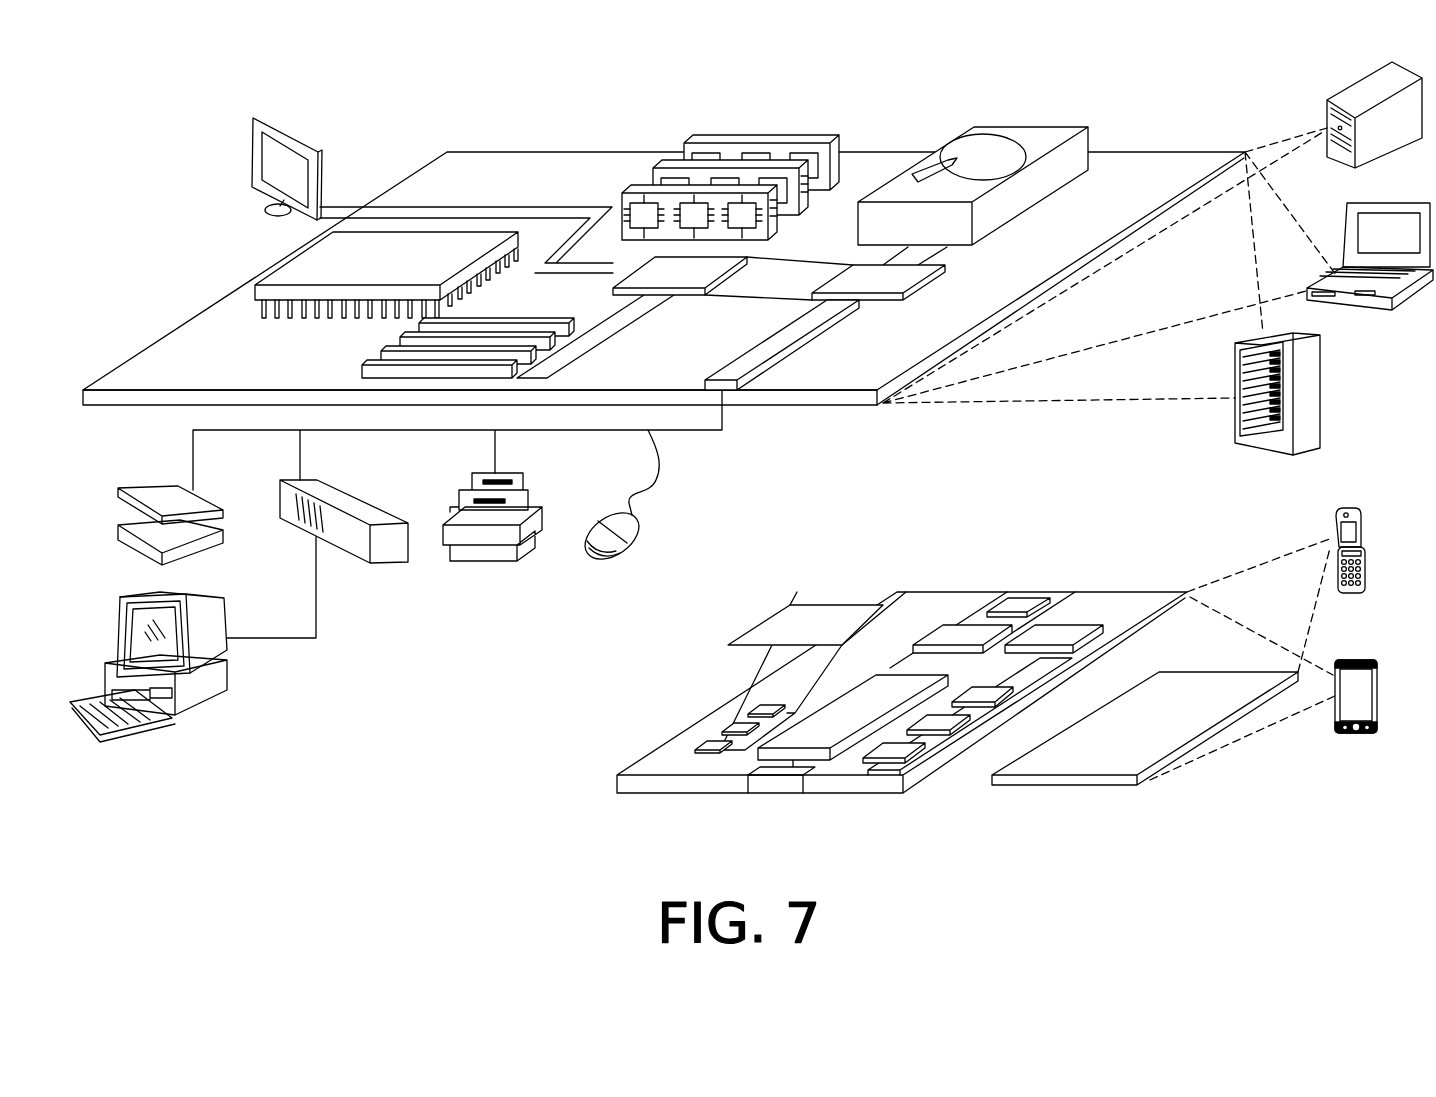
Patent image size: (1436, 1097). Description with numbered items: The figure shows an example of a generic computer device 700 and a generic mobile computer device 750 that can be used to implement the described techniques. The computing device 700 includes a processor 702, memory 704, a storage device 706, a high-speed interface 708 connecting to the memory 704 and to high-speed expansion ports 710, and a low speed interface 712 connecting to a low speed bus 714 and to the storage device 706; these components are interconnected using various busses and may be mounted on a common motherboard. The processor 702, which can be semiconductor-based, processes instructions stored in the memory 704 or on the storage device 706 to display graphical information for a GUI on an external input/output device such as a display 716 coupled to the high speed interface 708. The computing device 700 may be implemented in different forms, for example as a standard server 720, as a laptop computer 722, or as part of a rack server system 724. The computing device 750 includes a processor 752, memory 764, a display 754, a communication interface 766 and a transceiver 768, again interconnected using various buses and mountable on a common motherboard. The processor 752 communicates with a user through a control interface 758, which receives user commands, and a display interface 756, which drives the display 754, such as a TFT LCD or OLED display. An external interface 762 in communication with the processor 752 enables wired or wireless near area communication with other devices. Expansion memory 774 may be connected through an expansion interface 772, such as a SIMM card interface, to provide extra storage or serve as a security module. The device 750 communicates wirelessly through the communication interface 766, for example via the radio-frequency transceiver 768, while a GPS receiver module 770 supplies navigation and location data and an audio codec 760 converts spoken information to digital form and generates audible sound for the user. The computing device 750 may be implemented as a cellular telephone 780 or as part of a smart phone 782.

The computing device 700 is at (400, 99).
The processor 702 is at (280, 262).
The memory 704 is at (766, 143).
The storage device 706 is at (1016, 124).
The high-speed interface 708 is at (695, 268).
The high-speed expansion ports 710 is at (393, 350).
The low speed interface 712 is at (850, 273).
The low speed bus 714 is at (728, 372).
The display 716 is at (258, 116).
The standard server 720 is at (1348, 93).
The laptop computer 722 is at (1407, 203).
The rack server system 724 is at (1325, 392).
The mobile computer device 750 is at (577, 794).
The processor 752 is at (820, 722).
The display 754 is at (1185, 683).
The display interface 756 is at (903, 747).
The control interface 758 is at (947, 718).
The audio codec 760 is at (988, 685).
The external interface 762 is at (777, 778).
The memory 764 is at (725, 727).
The communication interface 766 is at (963, 627).
The transceiver 768 is at (1062, 630).
The GPS receiver module 770 is at (1018, 603).
The expansion interface 772 is at (882, 603).
The expansion memory 774 is at (792, 605).
The cellular telephone 780 is at (1347, 510).
The smart phone 782 is at (1347, 660).